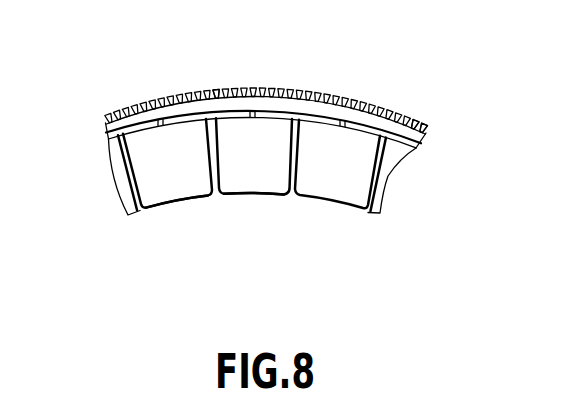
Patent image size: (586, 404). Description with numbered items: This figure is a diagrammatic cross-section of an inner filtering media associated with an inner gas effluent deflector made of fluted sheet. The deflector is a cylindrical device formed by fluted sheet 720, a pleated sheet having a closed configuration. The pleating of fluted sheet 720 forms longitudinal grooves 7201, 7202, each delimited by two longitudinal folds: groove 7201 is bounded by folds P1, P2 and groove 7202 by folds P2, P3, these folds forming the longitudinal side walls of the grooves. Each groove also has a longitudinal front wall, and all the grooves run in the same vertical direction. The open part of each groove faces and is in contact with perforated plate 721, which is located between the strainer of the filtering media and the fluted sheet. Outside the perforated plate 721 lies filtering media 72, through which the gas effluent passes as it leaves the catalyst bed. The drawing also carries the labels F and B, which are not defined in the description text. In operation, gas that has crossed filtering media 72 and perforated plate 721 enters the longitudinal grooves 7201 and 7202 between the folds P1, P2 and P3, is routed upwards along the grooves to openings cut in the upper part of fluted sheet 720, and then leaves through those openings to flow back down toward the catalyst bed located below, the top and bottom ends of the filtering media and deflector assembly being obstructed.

The filtering media 72 is at (151, 103).
The tooth F is at (216, 89).
The end teeth region B is at (424, 123).
The perforated plate 721 is at (406, 144).
The fluted sheet 720 is at (236, 220).
The longitudinal fold P1 is at (145, 213).
The longitudinal fold P2 is at (219, 196).
The longitudinal fold P3 is at (290, 198).
The longitudinal groove 7201 is at (175, 178).
The longitudinal groove 7202 is at (270, 172).